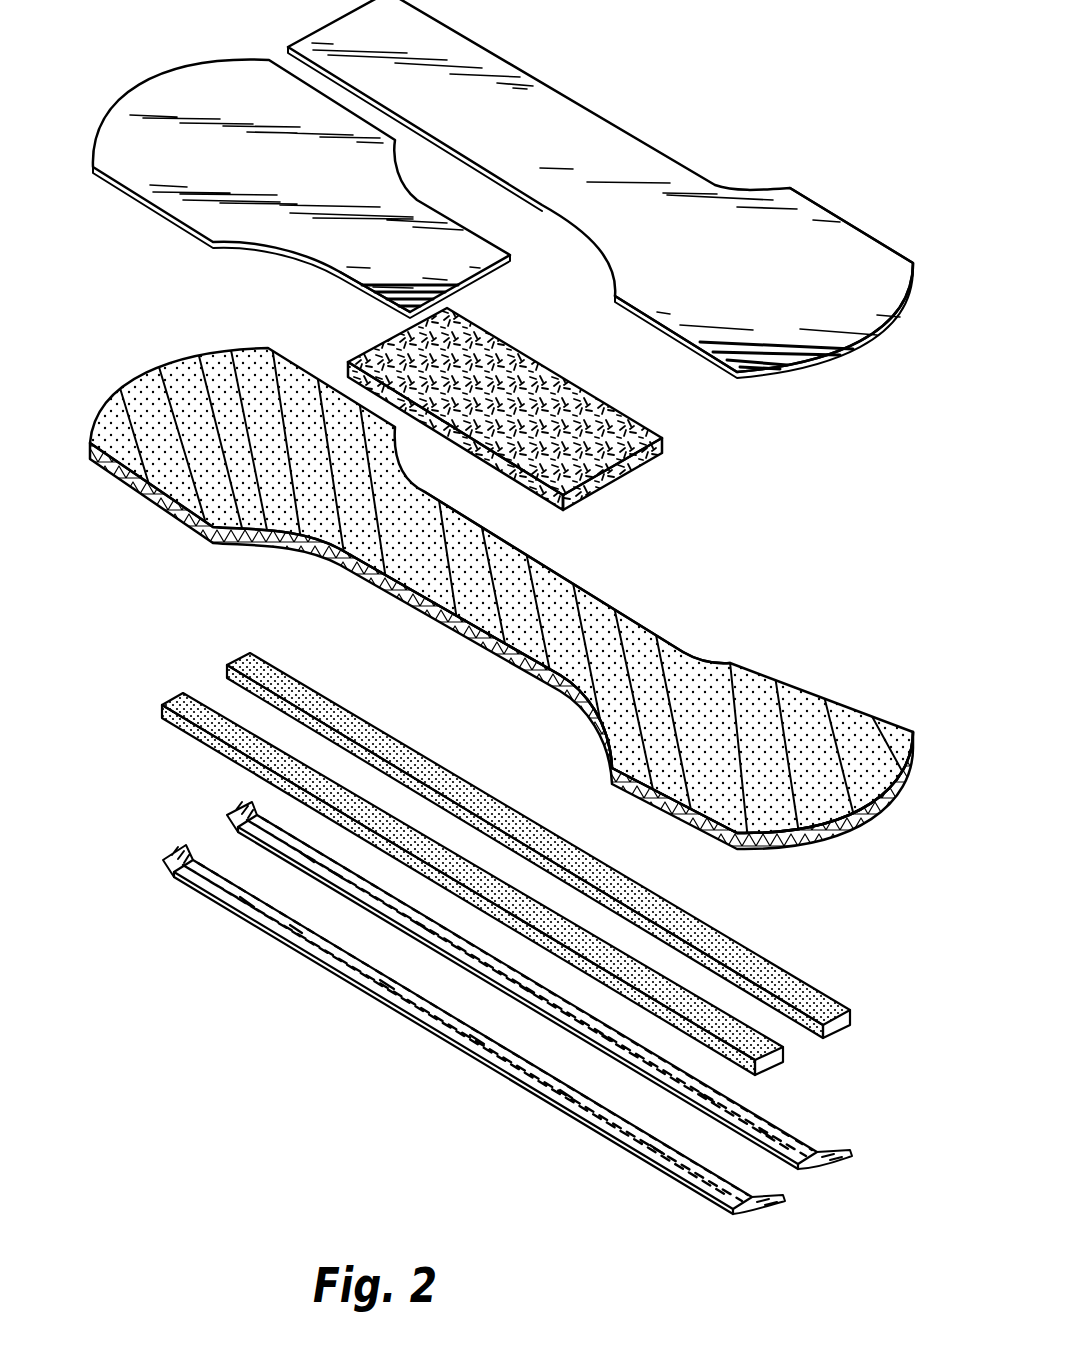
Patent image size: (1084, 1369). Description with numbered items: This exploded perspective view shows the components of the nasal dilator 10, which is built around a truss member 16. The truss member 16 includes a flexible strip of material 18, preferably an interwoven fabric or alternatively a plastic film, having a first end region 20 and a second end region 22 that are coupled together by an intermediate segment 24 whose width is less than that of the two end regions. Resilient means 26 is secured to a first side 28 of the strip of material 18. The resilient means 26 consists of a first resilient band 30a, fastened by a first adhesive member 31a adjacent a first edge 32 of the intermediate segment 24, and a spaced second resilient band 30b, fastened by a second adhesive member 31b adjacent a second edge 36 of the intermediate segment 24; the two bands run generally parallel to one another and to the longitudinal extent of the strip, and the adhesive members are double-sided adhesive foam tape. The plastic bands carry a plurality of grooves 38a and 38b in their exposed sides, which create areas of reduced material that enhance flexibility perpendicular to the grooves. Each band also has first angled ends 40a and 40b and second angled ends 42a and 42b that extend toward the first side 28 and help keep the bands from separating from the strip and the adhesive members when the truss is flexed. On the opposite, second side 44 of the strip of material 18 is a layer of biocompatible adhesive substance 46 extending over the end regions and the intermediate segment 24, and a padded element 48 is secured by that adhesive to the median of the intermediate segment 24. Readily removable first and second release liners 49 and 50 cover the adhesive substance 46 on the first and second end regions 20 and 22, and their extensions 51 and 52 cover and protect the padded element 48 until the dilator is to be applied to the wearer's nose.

The nasal dilator 10 is at (206, 50).
The truss member 16 is at (515, 586).
The flexible strip of material 18 is at (142, 499).
The first end region 20 is at (168, 405).
The second end region 22 is at (800, 800).
The intermediate segment 24 is at (545, 652).
The resilient means 26 is at (513, 960).
The first side of the strip of material 28 is at (710, 838).
The first resilient band 30a is at (443, 1056).
The second resilient band 30b is at (513, 1008).
The first adhesive member 31a is at (783, 1052).
The second adhesive member 31b is at (847, 1010).
The first edge of the intermediate segment 32 is at (455, 622).
The second edge of the intermediate segment 36 is at (600, 592).
The grooves of the first resilient band 38a is at (333, 975).
The grooves of the second resilient band 38b is at (327, 893).
The first angled end of the first resilient band 40a is at (170, 860).
The first angled end of the second resilient band 40b is at (227, 821).
The second angled end of the first resilient band 42a is at (745, 1212).
The second angled end of the second resilient band 42b is at (810, 1177).
The second side of the strip of material 44 is at (650, 650).
The adhesive substance 46 is at (229, 357).
The padded element 48 is at (660, 436).
The first release liner 49 is at (232, 104).
The second release liner 50 is at (785, 236).
The extension of the first release liner 51 is at (396, 268).
The extension of the second release liner 52 is at (600, 189).